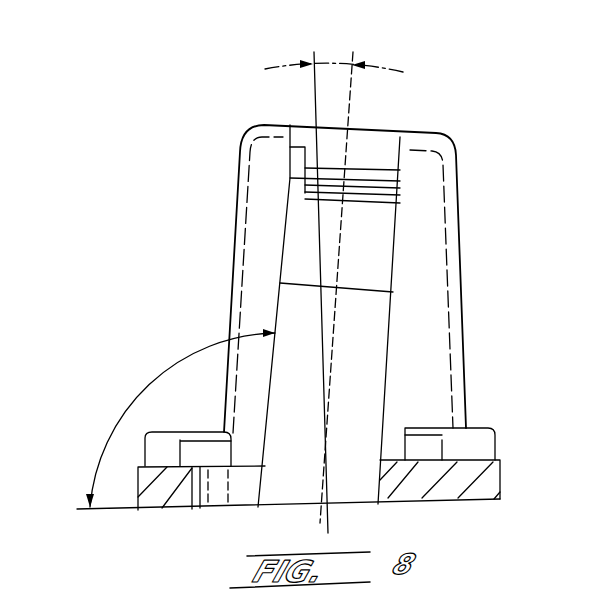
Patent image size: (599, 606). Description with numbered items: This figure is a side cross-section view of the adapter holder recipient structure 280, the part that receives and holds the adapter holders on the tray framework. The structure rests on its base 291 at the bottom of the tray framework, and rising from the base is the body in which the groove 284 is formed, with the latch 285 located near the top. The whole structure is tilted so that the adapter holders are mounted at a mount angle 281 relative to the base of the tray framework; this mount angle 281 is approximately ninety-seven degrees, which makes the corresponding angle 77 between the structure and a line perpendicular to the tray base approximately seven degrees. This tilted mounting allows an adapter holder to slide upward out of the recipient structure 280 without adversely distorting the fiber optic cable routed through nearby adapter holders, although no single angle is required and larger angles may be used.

The adapter holder recipient structure 280 is at (433, 98).
The mount angle 281 is at (145, 373).
The groove 284 is at (356, 372).
The latch 285 is at (400, 194).
The base 291 is at (487, 482).
The angle 77 is at (334, 280).